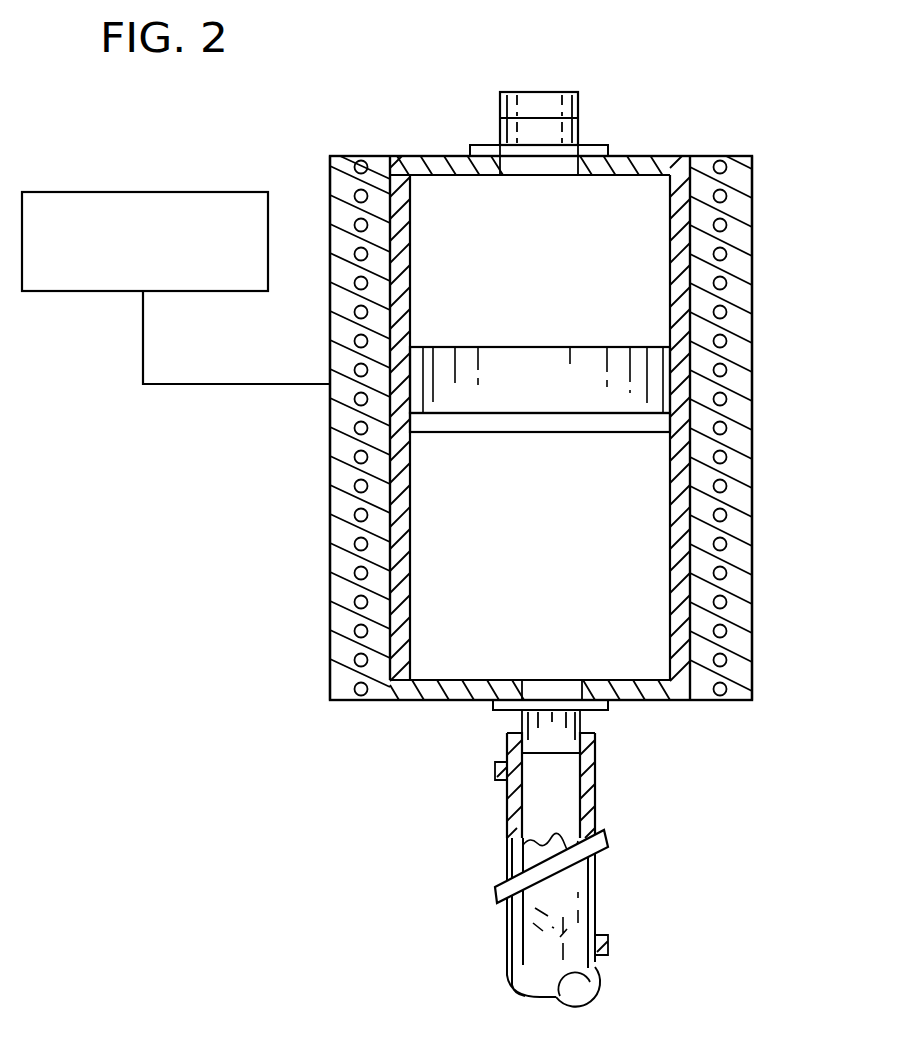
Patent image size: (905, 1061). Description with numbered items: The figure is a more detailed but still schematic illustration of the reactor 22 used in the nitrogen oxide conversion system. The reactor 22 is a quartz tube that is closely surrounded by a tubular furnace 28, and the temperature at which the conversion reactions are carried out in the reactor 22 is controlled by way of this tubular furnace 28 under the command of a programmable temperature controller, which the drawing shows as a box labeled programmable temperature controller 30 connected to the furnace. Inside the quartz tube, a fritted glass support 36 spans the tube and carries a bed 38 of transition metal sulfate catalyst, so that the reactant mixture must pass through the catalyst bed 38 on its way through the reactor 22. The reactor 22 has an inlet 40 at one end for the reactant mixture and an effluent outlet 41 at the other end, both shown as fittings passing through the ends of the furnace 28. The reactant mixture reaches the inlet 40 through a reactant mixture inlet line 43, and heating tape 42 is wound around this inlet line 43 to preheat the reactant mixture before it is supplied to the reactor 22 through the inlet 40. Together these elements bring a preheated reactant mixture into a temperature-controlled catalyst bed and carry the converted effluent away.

The reactor 22 is at (722, 142).
The tubular furnace 28 is at (752, 298).
The programmable temperature controller 30 is at (97, 192).
The fritted glass support 36 is at (523, 432).
The bed of transition metal sulfate catalyst 38 is at (545, 347).
The inlet 40 is at (582, 720).
The effluent outlet 41 is at (500, 113).
The heating tape 42 is at (495, 898).
The reactant mixture inlet line 43 is at (508, 938).